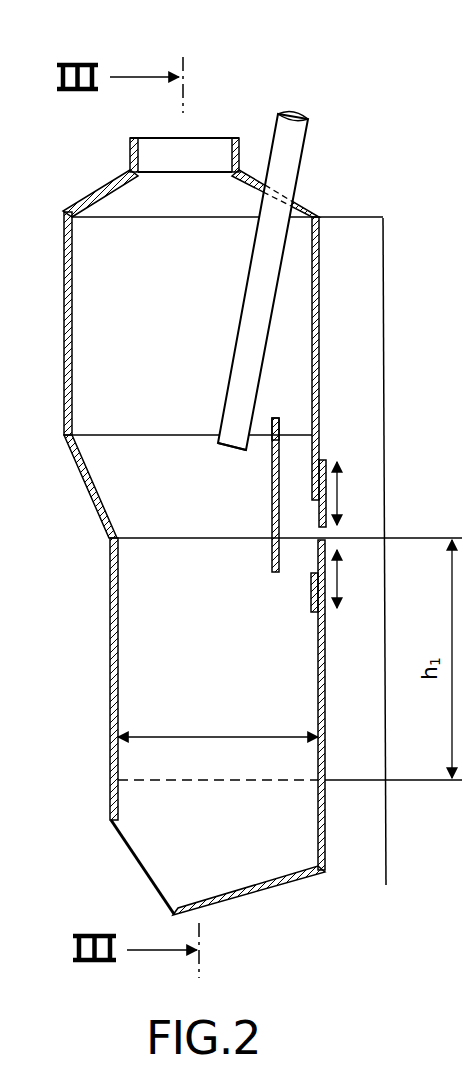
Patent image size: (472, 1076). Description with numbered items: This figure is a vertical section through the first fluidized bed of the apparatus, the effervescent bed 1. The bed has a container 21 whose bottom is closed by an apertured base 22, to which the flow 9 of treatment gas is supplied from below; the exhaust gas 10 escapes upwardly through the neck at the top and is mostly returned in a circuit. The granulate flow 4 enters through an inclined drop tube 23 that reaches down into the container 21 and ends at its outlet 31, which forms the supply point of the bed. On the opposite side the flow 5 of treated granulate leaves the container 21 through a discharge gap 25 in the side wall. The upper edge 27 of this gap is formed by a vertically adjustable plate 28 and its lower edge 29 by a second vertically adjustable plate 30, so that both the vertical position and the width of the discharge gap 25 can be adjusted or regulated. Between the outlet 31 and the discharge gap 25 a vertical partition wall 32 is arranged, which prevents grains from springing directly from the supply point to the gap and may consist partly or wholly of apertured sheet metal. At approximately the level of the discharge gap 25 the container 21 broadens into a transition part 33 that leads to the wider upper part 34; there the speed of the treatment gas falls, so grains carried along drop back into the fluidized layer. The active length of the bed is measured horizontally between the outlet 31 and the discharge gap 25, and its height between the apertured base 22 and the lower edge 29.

The effervescent bed 1 is at (108, 701).
The granulate flow 4 is at (298, 109).
The flow of treated granulate 5 is at (374, 848).
The flow of treatment gas 9 is at (133, 862).
The exhaust gas 10 is at (210, 70).
The container 21 is at (130, 567).
The apertured base 22 is at (235, 783).
The drop tube 23 is at (252, 255).
The discharge gap 25 is at (322, 537).
The upper edge 27 is at (318, 525).
The vertically adjustable plate 28 is at (327, 465).
The lower edge 29 is at (320, 542).
The vertically adjustable plate 30 is at (325, 612).
The outlet 31 is at (220, 441).
The vertical partition wall 32 is at (272, 445).
The transition part 33 is at (92, 498).
The upper part 34 is at (63, 230).